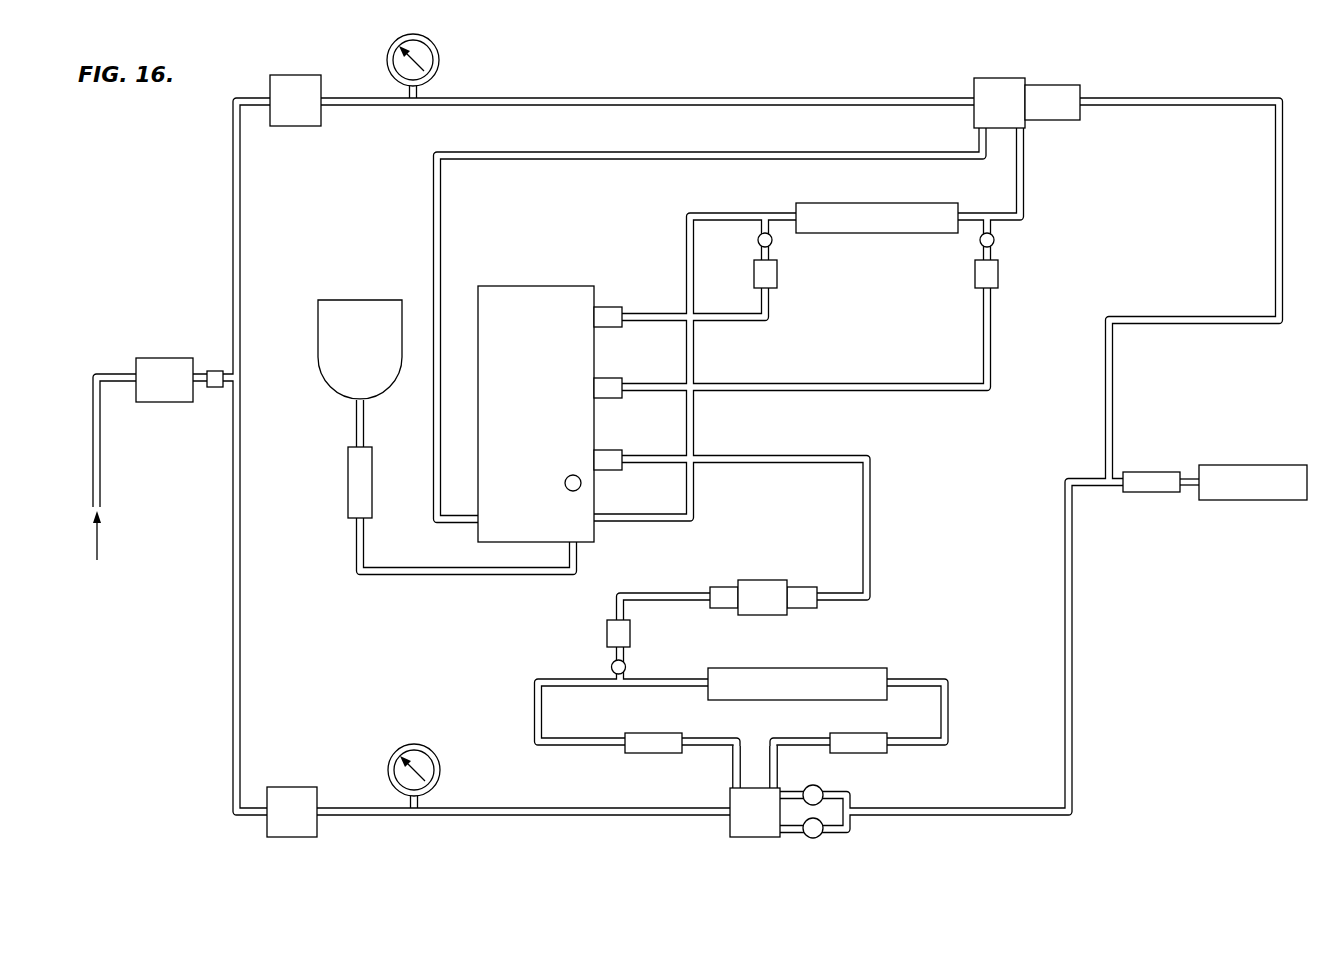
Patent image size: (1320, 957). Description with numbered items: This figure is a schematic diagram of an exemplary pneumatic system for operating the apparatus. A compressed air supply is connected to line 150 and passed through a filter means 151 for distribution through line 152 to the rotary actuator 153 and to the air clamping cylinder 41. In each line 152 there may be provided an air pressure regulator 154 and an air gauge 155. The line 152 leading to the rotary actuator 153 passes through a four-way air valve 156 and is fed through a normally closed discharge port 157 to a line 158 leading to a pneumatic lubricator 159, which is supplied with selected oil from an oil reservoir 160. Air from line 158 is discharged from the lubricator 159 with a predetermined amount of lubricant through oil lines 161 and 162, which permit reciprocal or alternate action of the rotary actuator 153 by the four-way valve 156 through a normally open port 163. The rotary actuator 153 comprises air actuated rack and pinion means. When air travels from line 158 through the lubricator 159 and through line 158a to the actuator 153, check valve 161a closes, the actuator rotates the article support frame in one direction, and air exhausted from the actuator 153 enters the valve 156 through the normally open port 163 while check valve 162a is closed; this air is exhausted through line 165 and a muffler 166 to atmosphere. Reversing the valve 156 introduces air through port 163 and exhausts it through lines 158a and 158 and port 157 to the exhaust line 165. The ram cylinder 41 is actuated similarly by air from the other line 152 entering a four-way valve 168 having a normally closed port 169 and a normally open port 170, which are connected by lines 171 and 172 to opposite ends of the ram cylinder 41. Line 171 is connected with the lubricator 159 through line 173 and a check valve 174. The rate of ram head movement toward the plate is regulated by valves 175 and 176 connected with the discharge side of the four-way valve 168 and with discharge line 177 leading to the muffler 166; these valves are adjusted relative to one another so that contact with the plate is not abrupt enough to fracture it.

The air clamping cylinder 41 is at (797, 684).
The line 150 is at (101, 462).
The filter means 151 is at (155, 370).
The line 152 is at (695, 97).
The rotary actuator 153 is at (877, 218).
The air pressure regulator 154 is at (297, 112).
The air gauge 155 is at (440, 62).
The four-way air valve 156 is at (993, 78).
The normally closed discharge port 157 is at (979, 140).
The line 158 is at (432, 221).
The line 158a is at (686, 250).
The pneumatic lubricator 159 is at (550, 414).
The oil reservoir 160 is at (342, 312).
The oil line 161 is at (731, 321).
The check valve 161a is at (773, 243).
The oil line 162 is at (861, 382).
The check valve 162a is at (995, 241).
The normally open port 163 is at (1025, 160).
The exhaust line 165 is at (1172, 97).
The muffler 166 is at (1242, 470).
The four-way valve 168 is at (742, 832).
The normally closed port 169 is at (732, 768).
The normally open port 170 is at (778, 766).
The line 171 is at (577, 746).
The line 172 is at (940, 746).
The line 173 is at (871, 526).
The check valve 174 is at (611, 667).
The valve 175 is at (822, 790).
The valve 176 is at (813, 839).
The discharge line 177 is at (985, 816).